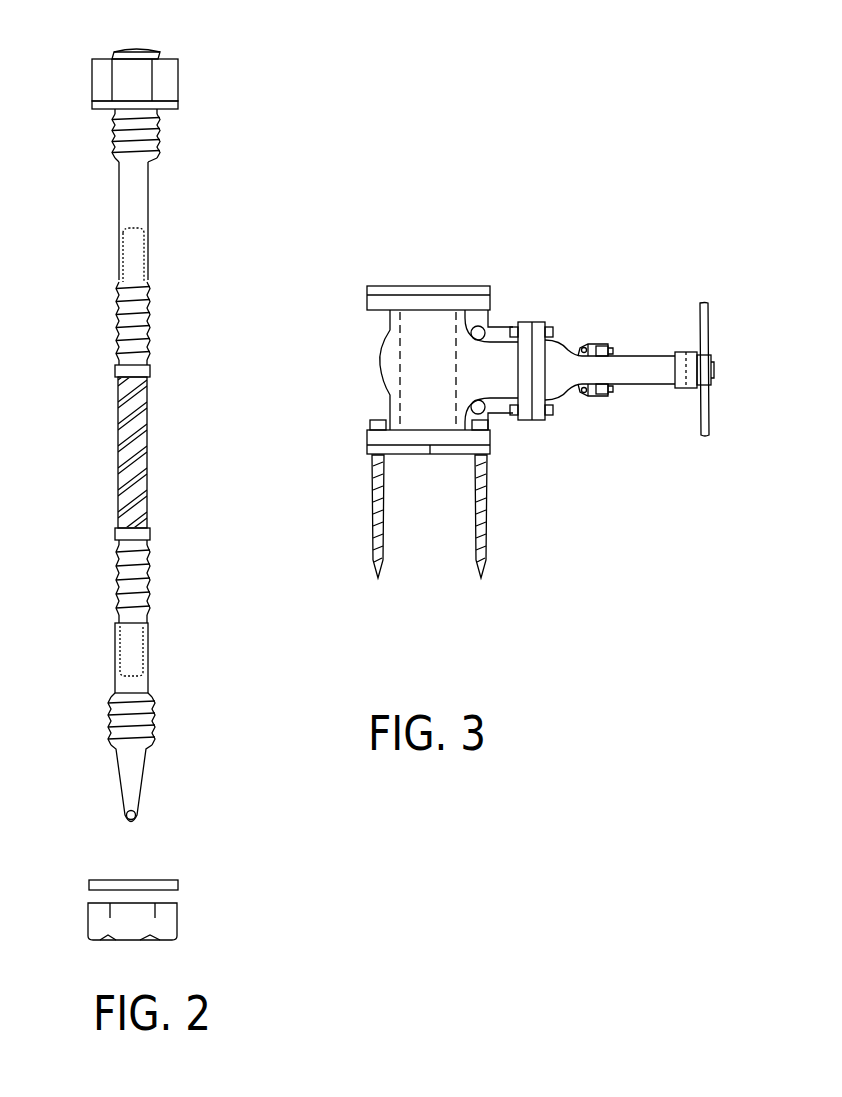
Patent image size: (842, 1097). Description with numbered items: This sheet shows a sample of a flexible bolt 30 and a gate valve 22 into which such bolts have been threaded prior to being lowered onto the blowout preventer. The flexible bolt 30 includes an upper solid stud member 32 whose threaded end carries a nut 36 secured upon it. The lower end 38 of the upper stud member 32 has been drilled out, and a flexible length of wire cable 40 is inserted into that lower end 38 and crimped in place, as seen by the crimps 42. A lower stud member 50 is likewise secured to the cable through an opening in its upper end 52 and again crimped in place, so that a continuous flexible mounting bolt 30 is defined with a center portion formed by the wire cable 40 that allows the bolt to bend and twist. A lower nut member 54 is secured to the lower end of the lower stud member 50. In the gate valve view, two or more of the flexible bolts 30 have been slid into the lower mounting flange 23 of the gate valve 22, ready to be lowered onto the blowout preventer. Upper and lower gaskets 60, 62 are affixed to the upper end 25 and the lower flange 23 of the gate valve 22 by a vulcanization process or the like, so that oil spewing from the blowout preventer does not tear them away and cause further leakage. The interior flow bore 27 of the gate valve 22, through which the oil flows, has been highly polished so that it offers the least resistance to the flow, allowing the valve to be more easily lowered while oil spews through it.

In FIG. 3, the gate valve 22 is at (500, 316).
In FIG. 3, the lower mounting flange 23 is at (366, 441).
In FIG. 3, the upper end 25 is at (380, 320).
In FIG. 3, the interior flow bore 27 is at (440, 338).
In FIG. 3, the flexible bolt 30 is at (372, 503).
In FIG. 2, the upper solid stud member 32 is at (130, 203).
In FIG. 2, the nut 36 is at (170, 88).
In FIG. 2, the lower end 38 is at (117, 285).
In FIG. 2, the wire cable 40 is at (135, 418).
In FIG. 2, the crimps 42 is at (138, 286).
In FIG. 2, the lower stud member 50 is at (128, 660).
In FIG. 2, the upper end 52 is at (126, 606).
In FIG. 2, the lower nut member 54 is at (95, 928).
In FIG. 3, the upper gasket 60 is at (388, 295).
In FIG. 3, the lower gasket 62 is at (430, 455).